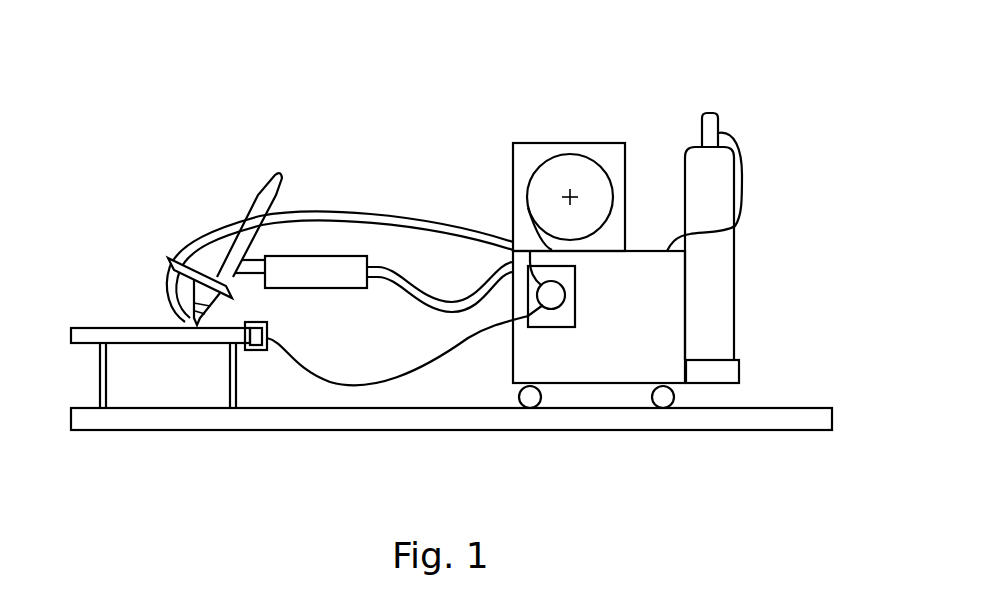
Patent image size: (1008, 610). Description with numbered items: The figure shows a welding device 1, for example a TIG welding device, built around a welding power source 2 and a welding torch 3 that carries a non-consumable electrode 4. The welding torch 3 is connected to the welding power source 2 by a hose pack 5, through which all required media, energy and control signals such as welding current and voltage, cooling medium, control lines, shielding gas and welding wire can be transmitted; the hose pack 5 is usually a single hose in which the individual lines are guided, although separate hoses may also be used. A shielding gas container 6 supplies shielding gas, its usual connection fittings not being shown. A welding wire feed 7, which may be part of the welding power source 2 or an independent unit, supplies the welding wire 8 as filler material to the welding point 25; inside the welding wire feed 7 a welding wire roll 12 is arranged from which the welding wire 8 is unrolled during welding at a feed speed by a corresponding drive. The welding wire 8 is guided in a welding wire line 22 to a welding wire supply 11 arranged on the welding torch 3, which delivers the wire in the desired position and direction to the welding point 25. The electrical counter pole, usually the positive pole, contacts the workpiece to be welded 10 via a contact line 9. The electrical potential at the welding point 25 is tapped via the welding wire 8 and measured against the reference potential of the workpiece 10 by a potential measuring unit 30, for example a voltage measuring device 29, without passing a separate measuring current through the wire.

The welding device 1 is at (462, 115).
The welding power source 2 is at (608, 333).
The welding torch 3 is at (246, 160).
The non-consumable electrode 4 is at (193, 326).
The hose pack 5 is at (427, 297).
The shielding gas container 6 is at (735, 310).
The welding wire feed 7 is at (570, 143).
The welding wire 8 is at (548, 245).
The contact line 9 is at (330, 386).
The workpiece to be welded 10 is at (80, 328).
The welding wire supply 11 is at (188, 318).
The welding wire roll 12 is at (577, 180).
The welding wire line 22 is at (340, 210).
The welding point 25 is at (185, 348).
The voltage measuring device 29 is at (551, 309).
The potential measuring unit 30 is at (560, 327).